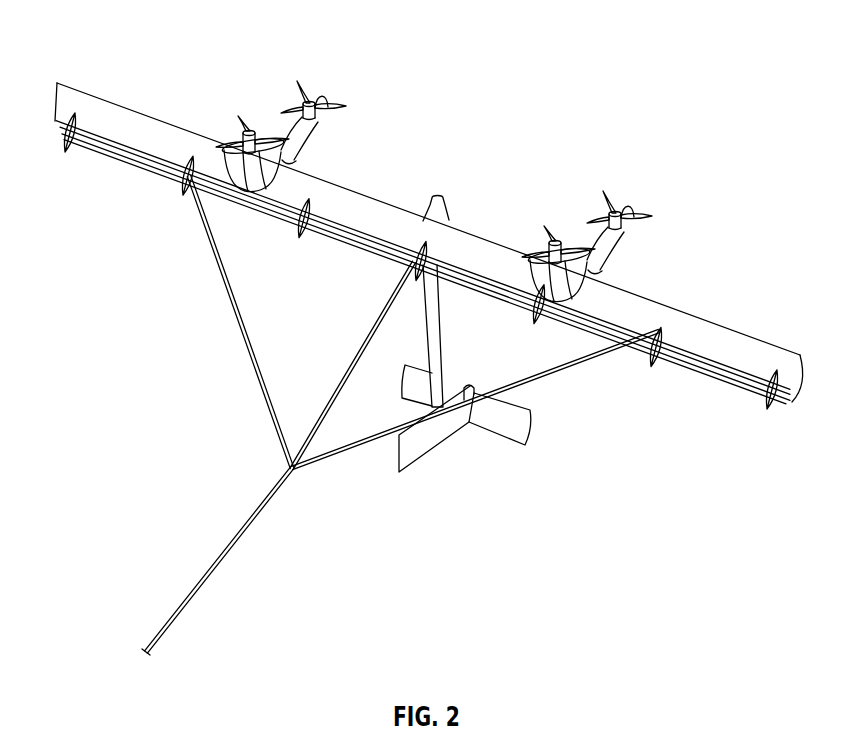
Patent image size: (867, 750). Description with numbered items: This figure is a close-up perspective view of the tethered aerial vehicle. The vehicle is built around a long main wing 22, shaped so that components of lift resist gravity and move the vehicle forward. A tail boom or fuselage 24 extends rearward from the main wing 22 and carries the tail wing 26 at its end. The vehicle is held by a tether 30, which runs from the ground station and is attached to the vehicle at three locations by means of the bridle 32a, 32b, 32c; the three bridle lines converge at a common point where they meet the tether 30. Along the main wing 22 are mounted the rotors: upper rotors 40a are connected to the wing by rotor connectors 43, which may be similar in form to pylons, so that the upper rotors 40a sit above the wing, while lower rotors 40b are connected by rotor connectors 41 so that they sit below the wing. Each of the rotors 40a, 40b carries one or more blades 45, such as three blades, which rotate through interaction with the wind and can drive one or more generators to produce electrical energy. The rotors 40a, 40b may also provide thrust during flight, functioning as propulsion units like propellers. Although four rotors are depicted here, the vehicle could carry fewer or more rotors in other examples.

The main wing 22 is at (720, 343).
The tail boom or fuselage 24 is at (433, 333).
The tail wing 26 is at (450, 433).
The tether 30 is at (236, 541).
The bridle 32a is at (238, 315).
The bridle 32b is at (372, 332).
The bridle 32c is at (365, 443).
The upper rotor 40a is at (246, 130).
The lower rotor 40b is at (306, 98).
The rotor connector 41 is at (313, 130).
The rotor connector 43 is at (237, 168).
The rotor blade 45 is at (336, 106).